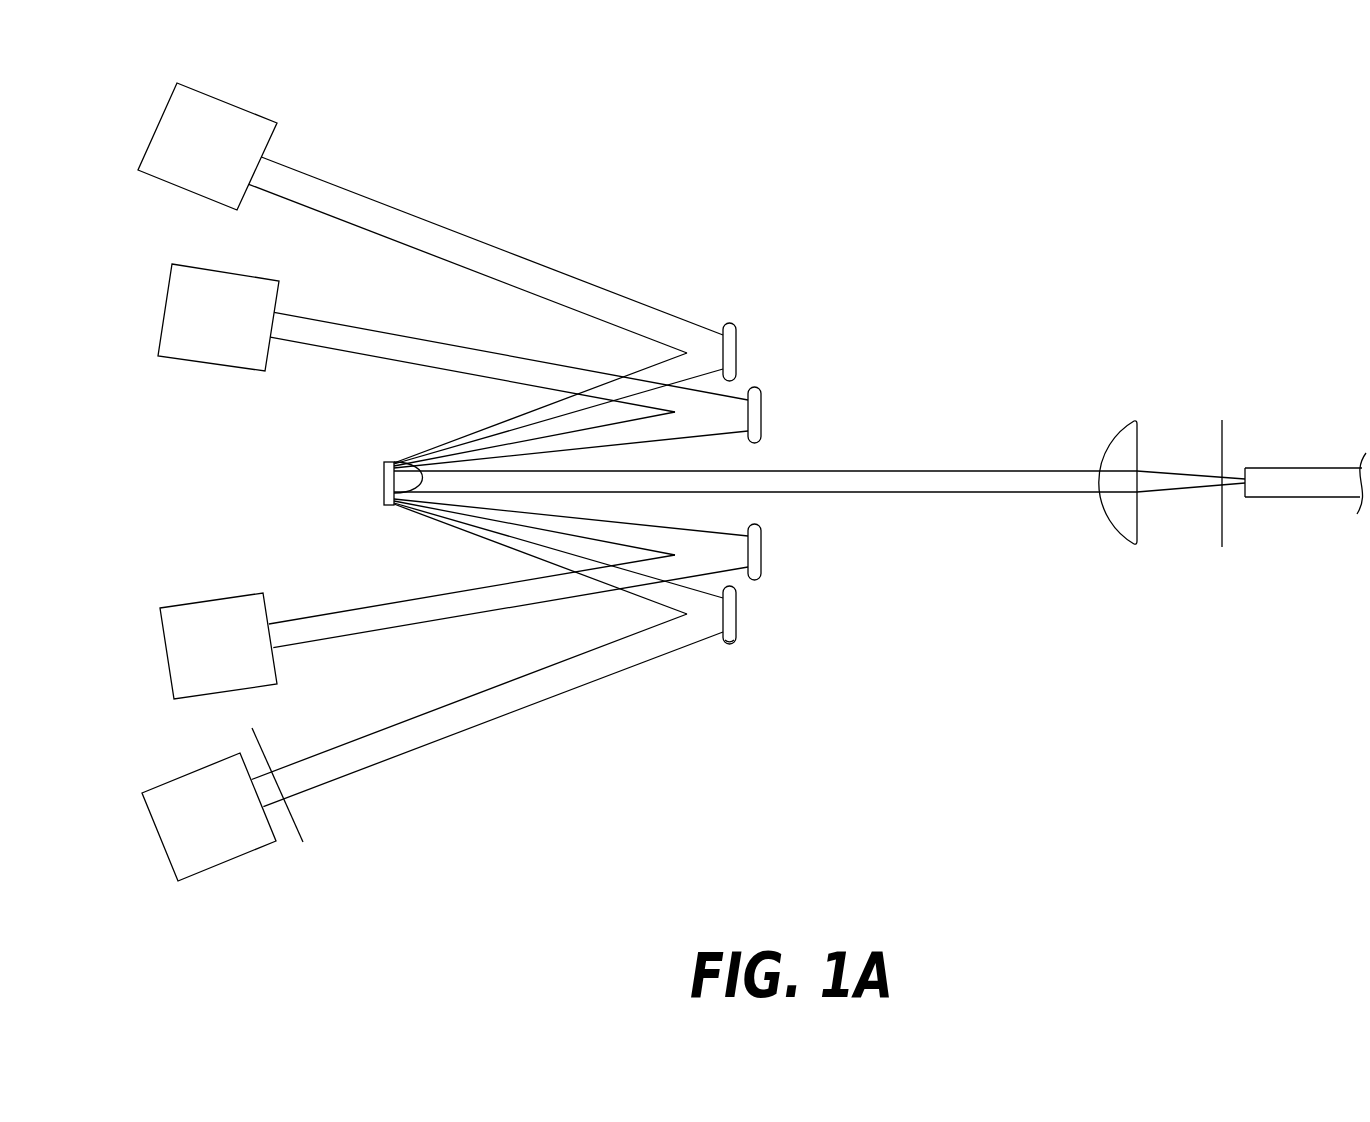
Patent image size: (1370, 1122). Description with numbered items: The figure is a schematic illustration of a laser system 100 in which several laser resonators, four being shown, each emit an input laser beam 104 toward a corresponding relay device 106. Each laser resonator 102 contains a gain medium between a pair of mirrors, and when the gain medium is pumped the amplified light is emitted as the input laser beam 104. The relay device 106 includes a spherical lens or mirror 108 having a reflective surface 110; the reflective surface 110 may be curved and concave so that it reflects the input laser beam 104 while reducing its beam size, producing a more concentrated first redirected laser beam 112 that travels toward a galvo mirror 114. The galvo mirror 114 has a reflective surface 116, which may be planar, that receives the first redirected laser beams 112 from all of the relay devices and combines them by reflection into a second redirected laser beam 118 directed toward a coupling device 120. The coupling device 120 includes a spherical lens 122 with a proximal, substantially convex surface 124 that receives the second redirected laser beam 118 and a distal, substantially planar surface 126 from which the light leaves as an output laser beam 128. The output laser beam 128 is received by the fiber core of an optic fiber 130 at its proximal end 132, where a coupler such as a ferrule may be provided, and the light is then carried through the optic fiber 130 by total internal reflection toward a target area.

The laser system 100 is at (1036, 262).
The laser resonator 102 is at (224, 160).
The input laser beam 104 is at (352, 773).
The relay device 106 is at (743, 629).
The spherical lens or mirror 108 is at (727, 645).
The reflective surface 110 is at (722, 633).
The first redirected laser beam 112 is at (500, 540).
The galvo mirror 114 is at (376, 468).
The reflective surface 116 is at (417, 458).
The second redirected laser beam 118 is at (892, 470).
The coupling device 120 is at (1118, 388).
The spherical lens 122 is at (1137, 418).
The convex surface 124 is at (1104, 447).
The planar surface 126 is at (1140, 514).
The output laser beam 128 is at (1151, 470).
The optic fiber 130 is at (1349, 461).
The proximal end 132 is at (1249, 498).